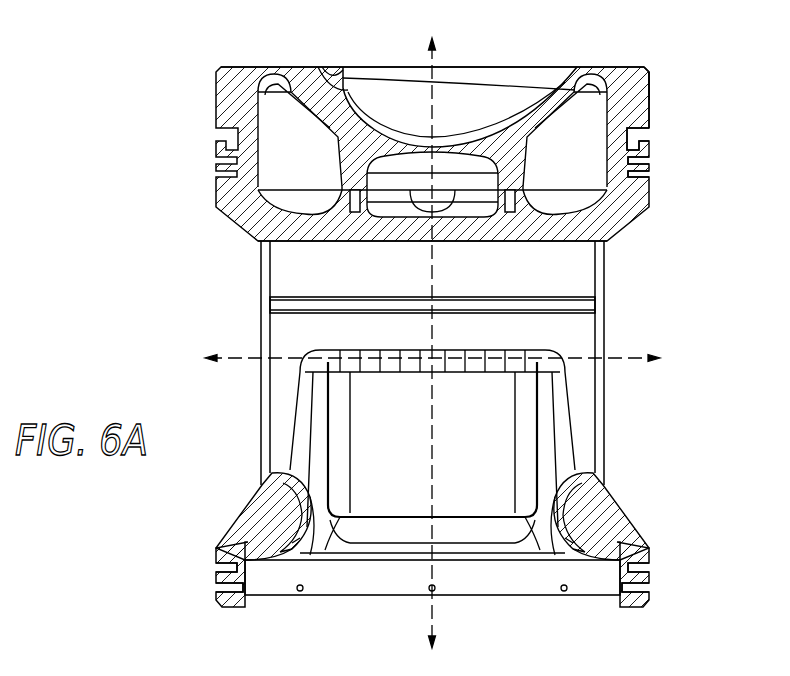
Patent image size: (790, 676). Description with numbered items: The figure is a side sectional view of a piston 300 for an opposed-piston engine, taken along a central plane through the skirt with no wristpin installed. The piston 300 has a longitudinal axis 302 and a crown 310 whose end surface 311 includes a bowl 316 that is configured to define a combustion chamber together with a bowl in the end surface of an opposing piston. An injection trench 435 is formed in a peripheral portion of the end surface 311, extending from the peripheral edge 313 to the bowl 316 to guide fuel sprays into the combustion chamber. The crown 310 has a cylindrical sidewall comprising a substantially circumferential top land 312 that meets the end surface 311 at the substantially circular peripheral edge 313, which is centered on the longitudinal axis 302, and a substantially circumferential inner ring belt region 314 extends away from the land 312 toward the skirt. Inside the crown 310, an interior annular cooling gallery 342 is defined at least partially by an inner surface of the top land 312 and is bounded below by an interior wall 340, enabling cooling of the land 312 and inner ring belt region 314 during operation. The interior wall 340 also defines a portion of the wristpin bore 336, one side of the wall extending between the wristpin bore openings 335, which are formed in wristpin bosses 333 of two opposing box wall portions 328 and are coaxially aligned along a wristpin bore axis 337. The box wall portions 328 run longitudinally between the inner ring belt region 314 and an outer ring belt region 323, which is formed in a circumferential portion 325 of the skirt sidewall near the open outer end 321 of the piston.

The piston 300 is at (150, 176).
The longitudinal axis 302 is at (424, 58).
The crown 310 is at (200, 96).
The end surface 311 is at (612, 67).
The top land 312 is at (652, 92).
The peripheral edge 313 is at (650, 68).
The inner ring belt region 314 is at (678, 115).
The bowl 316 is at (475, 100).
The open outer end 321 is at (464, 580).
The outer ring belt region 323 is at (678, 547).
The circumferential portion 325 is at (215, 550).
The box wall portions 328 is at (252, 261).
The wristpin bosses 333 is at (278, 512).
The wristpin bore openings 335 is at (255, 309).
The wristpin bore 336 is at (510, 344).
The wristpin bore axis 337 is at (627, 356).
The interior wall 340 is at (280, 226).
The interior annular cooling gallery 342 is at (280, 138).
The injection trench 435 is at (330, 68).